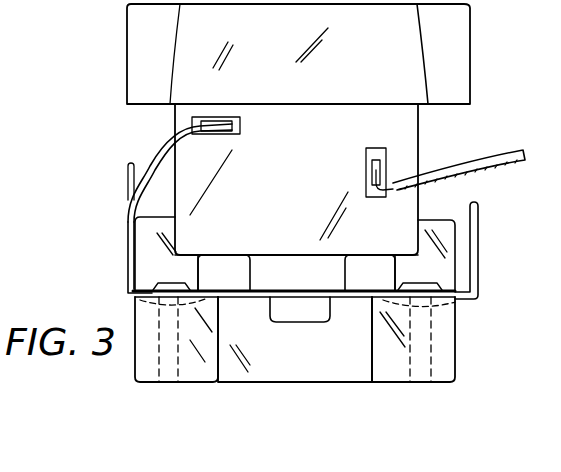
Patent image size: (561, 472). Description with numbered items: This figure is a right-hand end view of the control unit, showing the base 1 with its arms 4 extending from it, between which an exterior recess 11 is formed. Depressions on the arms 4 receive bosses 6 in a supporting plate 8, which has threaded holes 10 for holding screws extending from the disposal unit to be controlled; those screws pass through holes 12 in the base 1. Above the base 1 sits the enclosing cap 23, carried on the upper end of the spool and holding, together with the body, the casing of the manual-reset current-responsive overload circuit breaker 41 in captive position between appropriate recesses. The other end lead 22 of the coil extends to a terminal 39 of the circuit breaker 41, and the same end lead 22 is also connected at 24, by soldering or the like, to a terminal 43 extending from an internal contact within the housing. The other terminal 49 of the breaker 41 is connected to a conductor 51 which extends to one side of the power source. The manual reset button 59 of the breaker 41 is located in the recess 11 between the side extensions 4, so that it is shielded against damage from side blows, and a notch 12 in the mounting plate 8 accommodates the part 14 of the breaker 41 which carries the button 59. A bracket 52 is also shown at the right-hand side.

The base 1 is at (445, 342).
The arms 4 is at (135, 322).
The bosses 6 is at (140, 300).
The supporting plate 8 is at (243, 298).
The threaded holes 10 is at (168, 270).
The exterior recess 11 is at (302, 371).
The holes 12 is at (159, 361).
The part of breaker 14 is at (294, 276).
The end lead 22 is at (160, 147).
The enclosing cap 23 is at (127, 62).
The connection 24 is at (130, 212).
The terminal 39 is at (242, 125).
The circuit breaker 41 is at (300, 218).
The terminal 43 is at (128, 180).
The terminal 49 is at (367, 165).
The conductor 51 is at (465, 152).
The bracket 52 is at (478, 265).
The manual reset button 59 is at (312, 320).